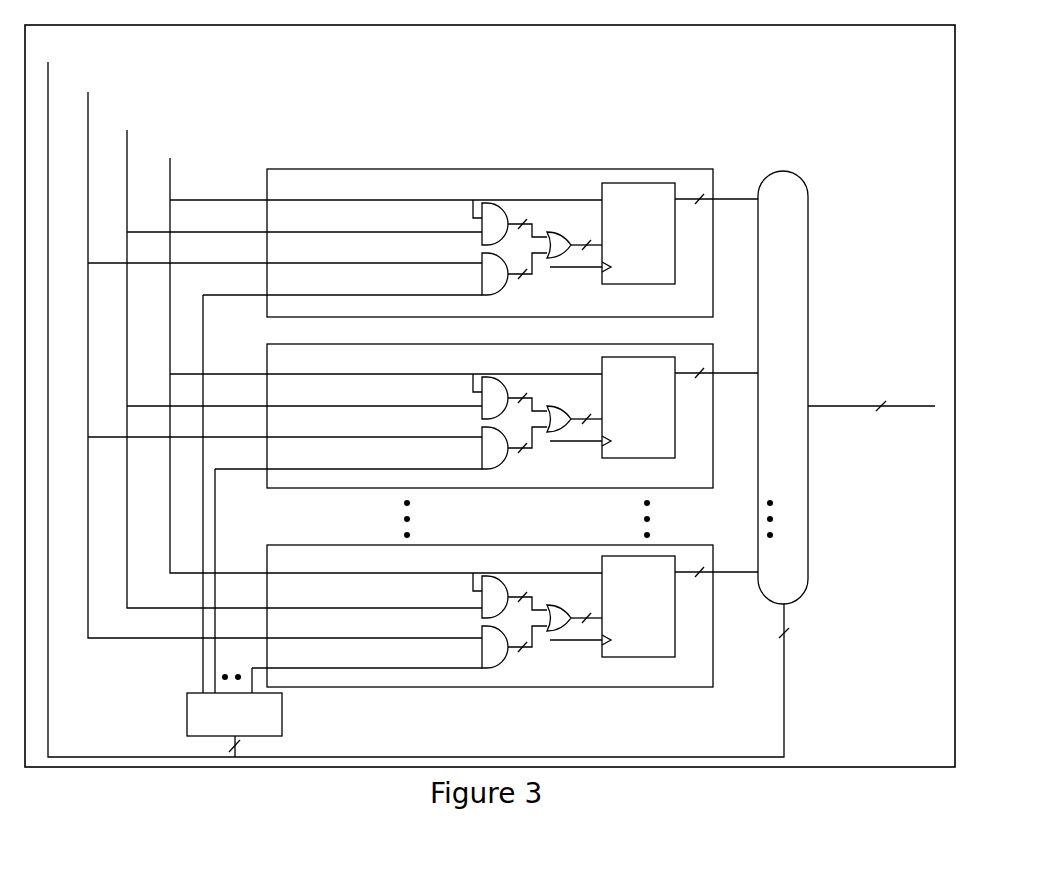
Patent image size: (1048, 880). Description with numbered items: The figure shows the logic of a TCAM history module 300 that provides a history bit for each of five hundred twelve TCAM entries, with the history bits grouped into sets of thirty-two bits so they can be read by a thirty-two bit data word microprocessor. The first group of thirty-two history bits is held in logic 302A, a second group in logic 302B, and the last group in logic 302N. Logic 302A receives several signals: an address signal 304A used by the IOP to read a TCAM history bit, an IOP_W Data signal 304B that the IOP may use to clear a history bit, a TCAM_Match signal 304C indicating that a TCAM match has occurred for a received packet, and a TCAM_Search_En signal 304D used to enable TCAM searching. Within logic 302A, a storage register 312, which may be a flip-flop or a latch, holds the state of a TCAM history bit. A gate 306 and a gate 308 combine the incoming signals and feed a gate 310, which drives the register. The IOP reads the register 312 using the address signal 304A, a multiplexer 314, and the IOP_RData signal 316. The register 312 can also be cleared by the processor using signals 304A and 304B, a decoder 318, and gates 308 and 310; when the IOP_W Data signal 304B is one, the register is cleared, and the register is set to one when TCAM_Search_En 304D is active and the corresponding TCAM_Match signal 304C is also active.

The TCAM match history circuit 300 is at (980, 712).
The logic 302A is at (482, 236).
The second history register block 302B is at (687, 477).
The logic 302N is at (705, 651).
The address signal 304A is at (152, 50).
The IOP_W Data signal 304B is at (232, 80).
The TCAM_Match signal 304C is at (295, 118).
The TCAM_Search_En signal 304D is at (313, 147).
The first AND gate 306 is at (492, 210).
The gate 308 is at (490, 290).
The gate 310 is at (552, 237).
The storage register 312 is at (632, 185).
The multiplexer 314 is at (838, 258).
The IOP_RData signal 316 is at (880, 350).
The decoder 318 is at (184, 718).